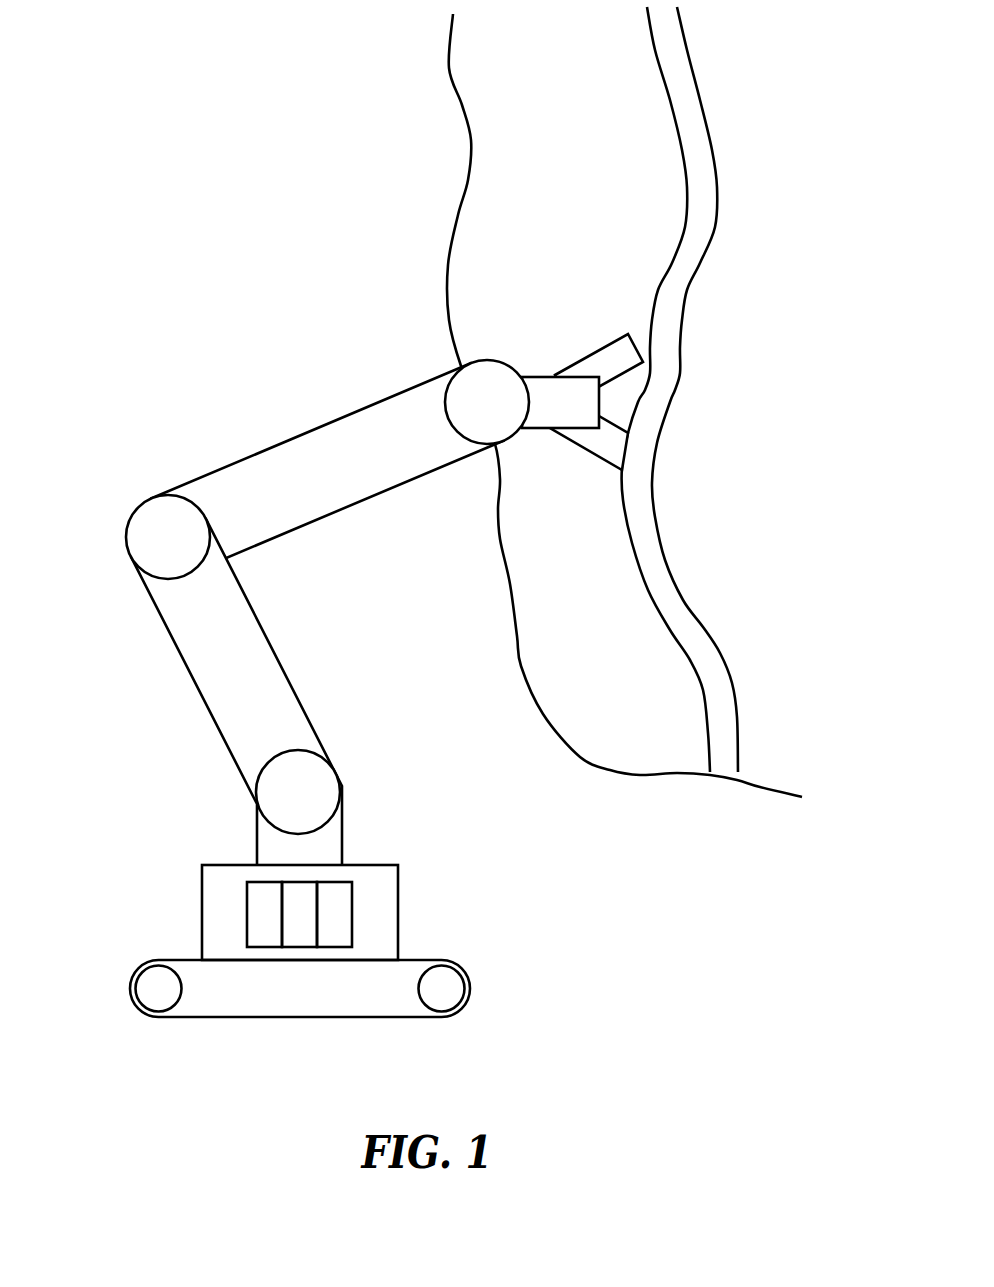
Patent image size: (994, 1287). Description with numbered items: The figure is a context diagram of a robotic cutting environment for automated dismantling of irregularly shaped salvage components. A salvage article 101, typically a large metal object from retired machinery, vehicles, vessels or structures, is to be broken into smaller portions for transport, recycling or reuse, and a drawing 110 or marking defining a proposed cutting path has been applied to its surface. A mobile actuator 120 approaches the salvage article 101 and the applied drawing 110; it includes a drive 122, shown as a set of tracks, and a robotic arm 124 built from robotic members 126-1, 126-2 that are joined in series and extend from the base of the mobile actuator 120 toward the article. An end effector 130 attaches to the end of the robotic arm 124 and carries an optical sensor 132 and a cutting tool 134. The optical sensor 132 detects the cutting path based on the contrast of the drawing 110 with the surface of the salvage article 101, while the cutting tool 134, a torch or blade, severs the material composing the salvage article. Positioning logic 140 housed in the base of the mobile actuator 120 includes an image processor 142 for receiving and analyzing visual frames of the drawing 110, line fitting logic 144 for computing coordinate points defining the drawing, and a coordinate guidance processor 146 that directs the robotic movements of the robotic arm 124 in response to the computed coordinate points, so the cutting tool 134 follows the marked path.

The salvage article 101 is at (563, 142).
The drawing 110 is at (697, 84).
The mobile actuator 120 is at (352, 645).
The drive 122 is at (300, 922).
The robotic arm 124 is at (158, 512).
The robotic member 126-1 is at (287, 662).
The robotic member 126-2 is at (268, 448).
The end effector 130 is at (537, 377).
The optical sensor 132 is at (603, 350).
The cutting tool 134 is at (592, 455).
The positioning logic 140 is at (398, 878).
The image processor 142 is at (297, 948).
The line fitting logic 144 is at (333, 948).
The coordinate guidance processor 146 is at (263, 948).